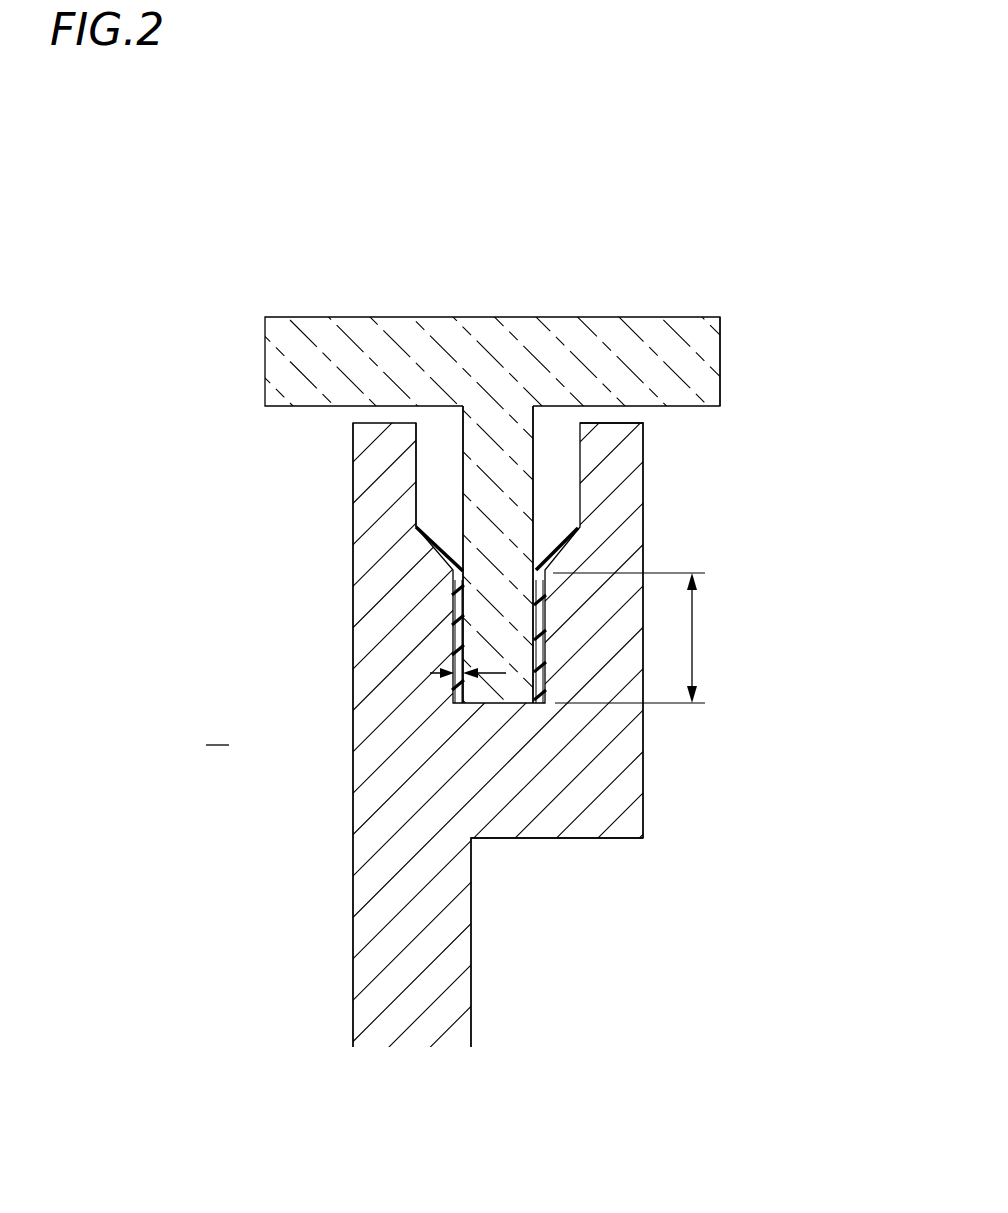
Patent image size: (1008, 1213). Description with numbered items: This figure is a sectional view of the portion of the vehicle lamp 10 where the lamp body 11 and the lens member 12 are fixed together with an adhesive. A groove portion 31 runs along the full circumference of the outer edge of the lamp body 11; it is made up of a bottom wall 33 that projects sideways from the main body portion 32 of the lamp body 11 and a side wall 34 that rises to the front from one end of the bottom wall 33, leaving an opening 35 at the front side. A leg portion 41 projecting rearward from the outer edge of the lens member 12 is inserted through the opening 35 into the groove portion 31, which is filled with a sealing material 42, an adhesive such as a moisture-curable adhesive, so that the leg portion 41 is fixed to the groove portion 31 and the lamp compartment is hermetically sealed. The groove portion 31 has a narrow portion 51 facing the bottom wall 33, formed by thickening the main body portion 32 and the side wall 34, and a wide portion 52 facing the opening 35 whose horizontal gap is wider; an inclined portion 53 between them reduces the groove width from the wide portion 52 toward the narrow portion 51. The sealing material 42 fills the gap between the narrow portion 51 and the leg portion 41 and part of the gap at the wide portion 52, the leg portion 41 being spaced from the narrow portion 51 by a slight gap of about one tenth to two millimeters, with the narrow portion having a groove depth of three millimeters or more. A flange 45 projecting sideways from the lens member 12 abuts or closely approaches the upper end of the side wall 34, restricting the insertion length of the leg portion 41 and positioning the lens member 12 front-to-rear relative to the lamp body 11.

The vehicle lamp 10 is at (666, 186).
The lamp body 11 is at (428, 943).
The lens member 12 is at (503, 335).
The groove portion 31 is at (445, 450).
The main body portion 32 is at (372, 680).
The bottom wall 33 is at (520, 777).
The side wall 34 is at (595, 658).
The opening 35 is at (558, 455).
The leg portion 41 is at (515, 488).
The sealing material 42 is at (536, 546).
The flange 45 is at (690, 353).
The narrow portion 51 is at (456, 612).
The wide portion 52 is at (570, 468).
The inclined portion 53 is at (420, 532).